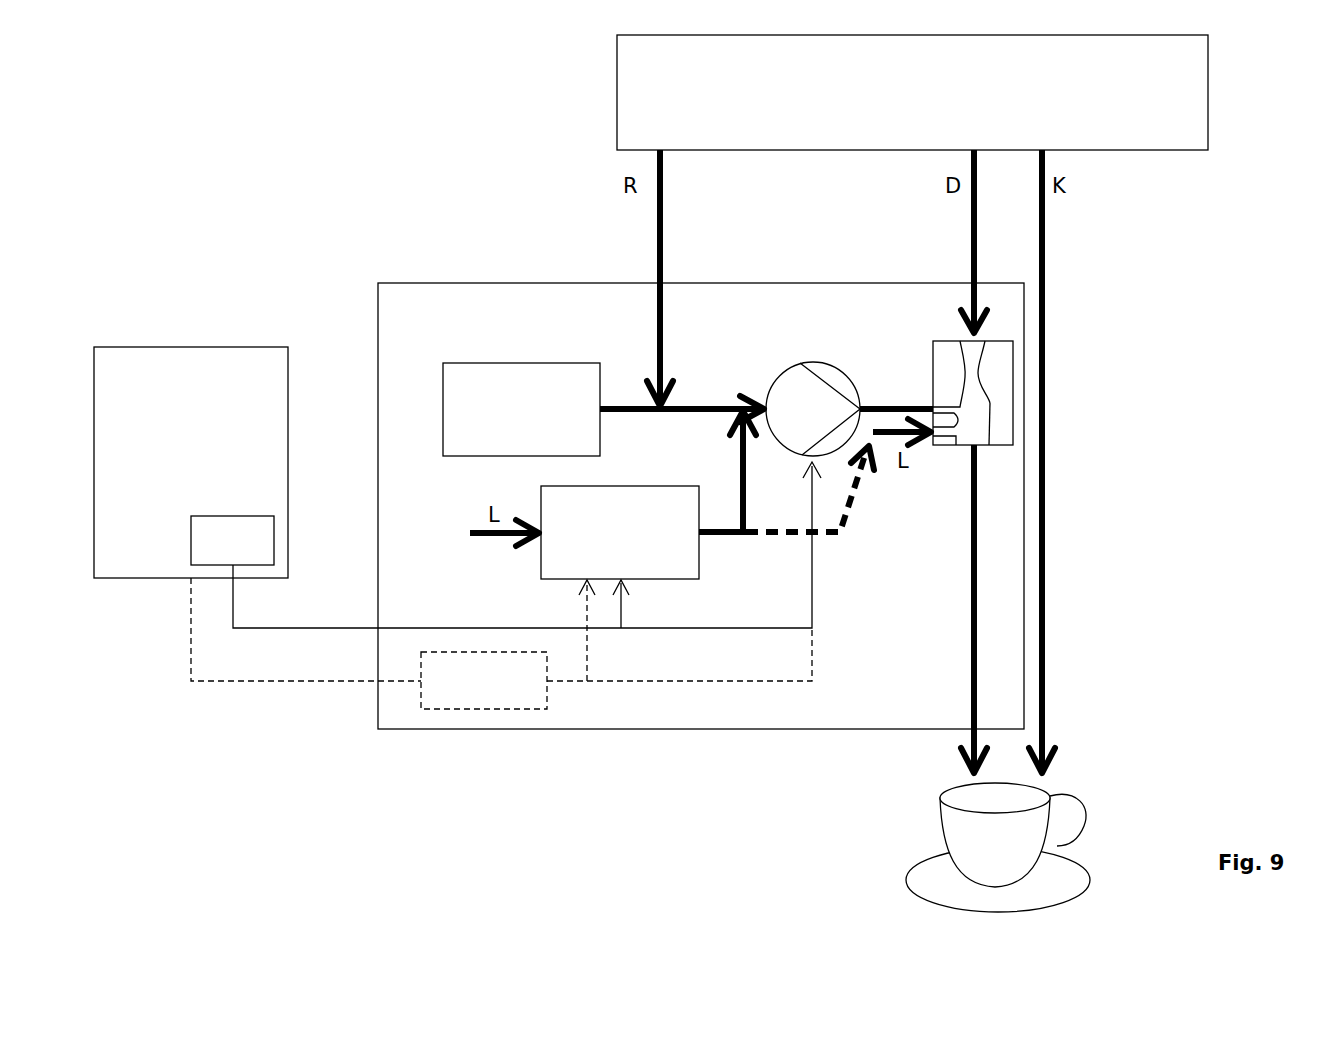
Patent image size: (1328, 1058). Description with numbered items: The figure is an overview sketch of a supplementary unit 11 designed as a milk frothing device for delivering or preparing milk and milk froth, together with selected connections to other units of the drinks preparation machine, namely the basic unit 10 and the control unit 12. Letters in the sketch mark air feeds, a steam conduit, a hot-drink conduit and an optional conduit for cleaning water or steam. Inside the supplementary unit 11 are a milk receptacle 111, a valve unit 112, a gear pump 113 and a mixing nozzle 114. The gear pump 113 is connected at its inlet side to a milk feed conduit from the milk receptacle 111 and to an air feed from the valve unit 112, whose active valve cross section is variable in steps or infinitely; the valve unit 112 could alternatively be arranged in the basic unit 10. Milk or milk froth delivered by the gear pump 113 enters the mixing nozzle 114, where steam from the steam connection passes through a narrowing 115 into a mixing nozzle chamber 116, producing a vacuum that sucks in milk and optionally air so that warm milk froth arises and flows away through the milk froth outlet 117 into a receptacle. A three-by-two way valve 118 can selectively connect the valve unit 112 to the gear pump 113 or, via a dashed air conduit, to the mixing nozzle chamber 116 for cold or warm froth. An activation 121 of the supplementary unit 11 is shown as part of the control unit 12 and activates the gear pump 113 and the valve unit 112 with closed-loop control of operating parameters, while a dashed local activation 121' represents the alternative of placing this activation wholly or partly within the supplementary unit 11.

The basic unit 10 is at (912, 92).
The supplementary unit 11 is at (701, 506).
The control unit 12 is at (191, 462).
The milk receptacle 111 is at (457, 395).
The valve unit 112 is at (573, 535).
The gear pump 113 is at (800, 388).
The mixing nozzle 114 is at (948, 358).
The narrowing 115 is at (970, 373).
The mixing nozzle chamber 116 is at (972, 428).
The milk froth outlet 117 is at (970, 693).
The 3/2 way valve 118 is at (743, 535).
The activation 121 is at (506, 545).
The local activation 121' is at (501, 643).